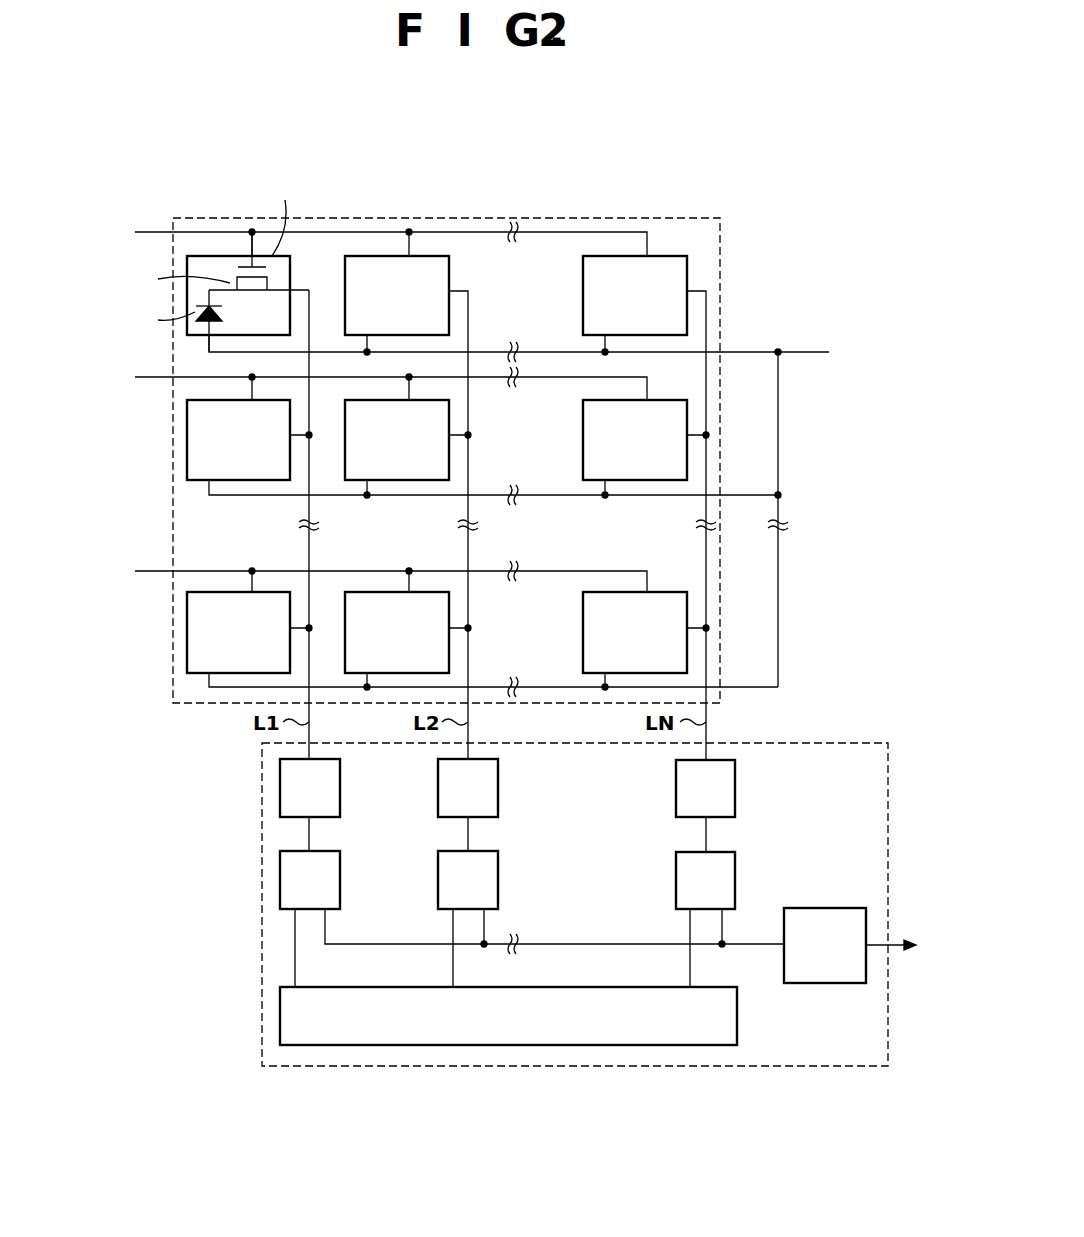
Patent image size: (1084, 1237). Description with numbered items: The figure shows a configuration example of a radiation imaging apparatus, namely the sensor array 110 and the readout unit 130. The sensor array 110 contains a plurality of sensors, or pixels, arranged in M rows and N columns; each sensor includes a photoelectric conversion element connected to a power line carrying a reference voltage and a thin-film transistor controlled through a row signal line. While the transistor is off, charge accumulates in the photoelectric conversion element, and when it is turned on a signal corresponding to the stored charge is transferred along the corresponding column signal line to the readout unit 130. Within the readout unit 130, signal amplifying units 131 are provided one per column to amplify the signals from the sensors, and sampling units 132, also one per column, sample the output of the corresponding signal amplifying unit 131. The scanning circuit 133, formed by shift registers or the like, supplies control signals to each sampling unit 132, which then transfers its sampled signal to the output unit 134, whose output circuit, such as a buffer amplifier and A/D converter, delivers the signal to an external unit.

The sensor array 110 is at (190, 218).
The readout unit 130 is at (262, 778).
The signal amplifying unit 131 is at (507, 788).
The sampling unit 132 is at (507, 880).
The scanning circuit 133 is at (508, 1016).
The output unit 134 is at (825, 945).